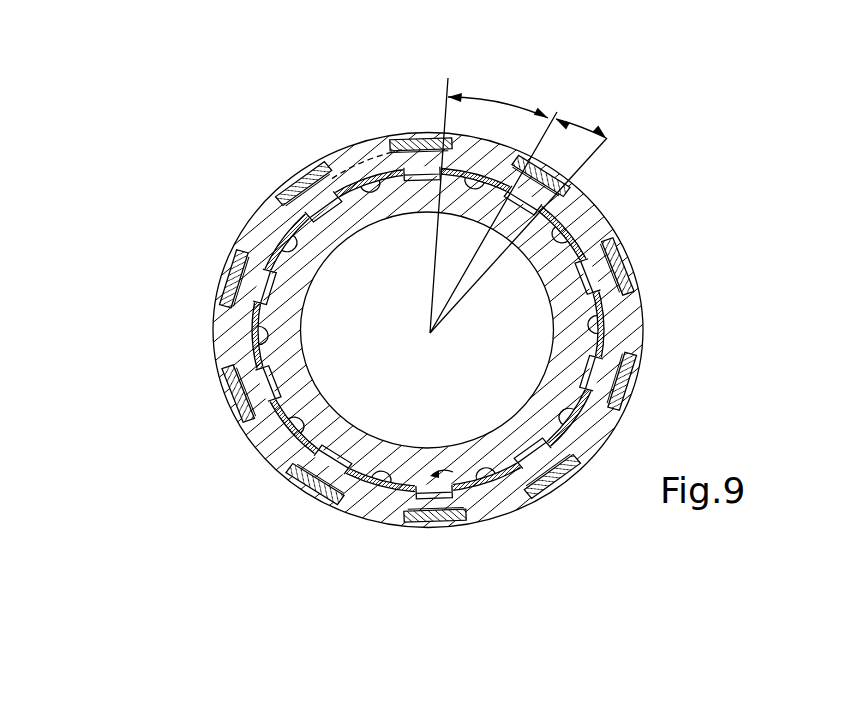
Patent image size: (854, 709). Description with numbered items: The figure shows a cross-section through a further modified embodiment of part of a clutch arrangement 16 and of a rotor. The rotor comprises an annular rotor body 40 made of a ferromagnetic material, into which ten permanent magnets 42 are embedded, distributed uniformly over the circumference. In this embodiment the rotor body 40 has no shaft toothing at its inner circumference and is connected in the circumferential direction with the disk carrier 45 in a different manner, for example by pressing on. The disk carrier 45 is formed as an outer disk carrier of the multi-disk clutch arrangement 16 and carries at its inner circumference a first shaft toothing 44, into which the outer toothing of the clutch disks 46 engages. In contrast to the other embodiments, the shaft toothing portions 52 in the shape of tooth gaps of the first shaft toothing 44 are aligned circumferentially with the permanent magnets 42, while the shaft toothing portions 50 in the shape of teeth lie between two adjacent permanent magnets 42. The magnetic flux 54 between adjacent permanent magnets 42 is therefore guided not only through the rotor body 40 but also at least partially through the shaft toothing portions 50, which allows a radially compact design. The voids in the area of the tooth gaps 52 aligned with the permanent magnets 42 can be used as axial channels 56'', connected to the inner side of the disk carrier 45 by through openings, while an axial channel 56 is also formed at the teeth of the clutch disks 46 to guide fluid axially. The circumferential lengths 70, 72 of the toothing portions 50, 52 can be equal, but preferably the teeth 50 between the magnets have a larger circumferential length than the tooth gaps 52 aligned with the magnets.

The clutch arrangement 16 is at (660, 170).
The rotor body 40 is at (265, 433).
The permanent magnets 42 is at (235, 392).
The first shaft toothing 44 is at (457, 492).
The disk carrier 45 is at (327, 433).
The clutch disks 46 is at (284, 440).
The shaft toothing portions 50 is at (283, 224).
The shaft toothing portions 52 is at (270, 243).
The magnetic flux 54 is at (344, 182).
The axial channel 56 is at (370, 539).
The axial channel 56'' is at (434, 539).
The circumferential length 70 is at (575, 122).
The circumferential length 72 is at (492, 102).